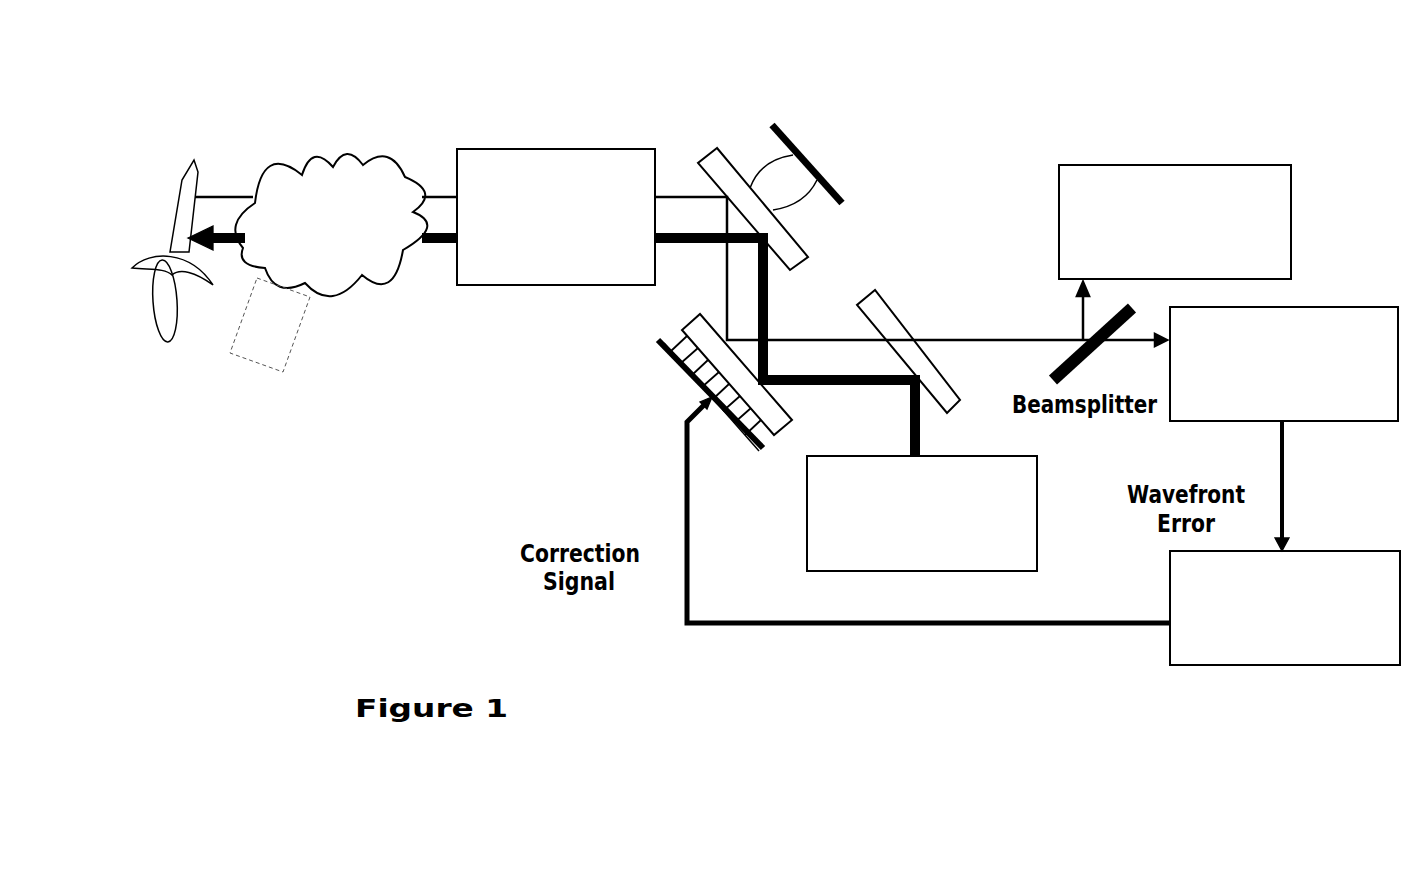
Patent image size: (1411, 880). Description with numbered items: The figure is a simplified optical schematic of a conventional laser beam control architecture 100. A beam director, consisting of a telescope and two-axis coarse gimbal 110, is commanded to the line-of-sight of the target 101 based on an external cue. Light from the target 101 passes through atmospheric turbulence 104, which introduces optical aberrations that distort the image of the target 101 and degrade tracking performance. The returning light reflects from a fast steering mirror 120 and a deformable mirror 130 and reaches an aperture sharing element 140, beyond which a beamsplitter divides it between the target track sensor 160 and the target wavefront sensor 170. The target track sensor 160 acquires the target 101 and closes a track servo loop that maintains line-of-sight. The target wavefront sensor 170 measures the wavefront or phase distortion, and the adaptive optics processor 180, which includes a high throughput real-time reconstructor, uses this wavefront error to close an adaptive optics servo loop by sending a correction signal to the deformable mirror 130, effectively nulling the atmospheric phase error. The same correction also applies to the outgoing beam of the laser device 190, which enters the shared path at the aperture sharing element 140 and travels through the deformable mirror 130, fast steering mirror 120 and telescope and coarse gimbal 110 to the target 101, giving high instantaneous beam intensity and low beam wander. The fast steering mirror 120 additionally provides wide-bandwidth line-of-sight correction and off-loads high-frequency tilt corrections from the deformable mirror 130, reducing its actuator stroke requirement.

The laser beam control architecture 100 is at (393, 556).
The target 101 is at (172, 299).
The atmospheric turbulence 104 is at (328, 290).
The telescope and coarse gimbal 110 is at (556, 217).
The fast steering mirror 120 is at (838, 190).
The deformable mirror 130 is at (655, 396).
The aperture sharing element 140 is at (940, 319).
The target track sensor 160 is at (1175, 222).
The target wavefront sensor 170 is at (1284, 364).
The adaptive optics processor 180 is at (1285, 608).
The laser device 190 is at (922, 513).